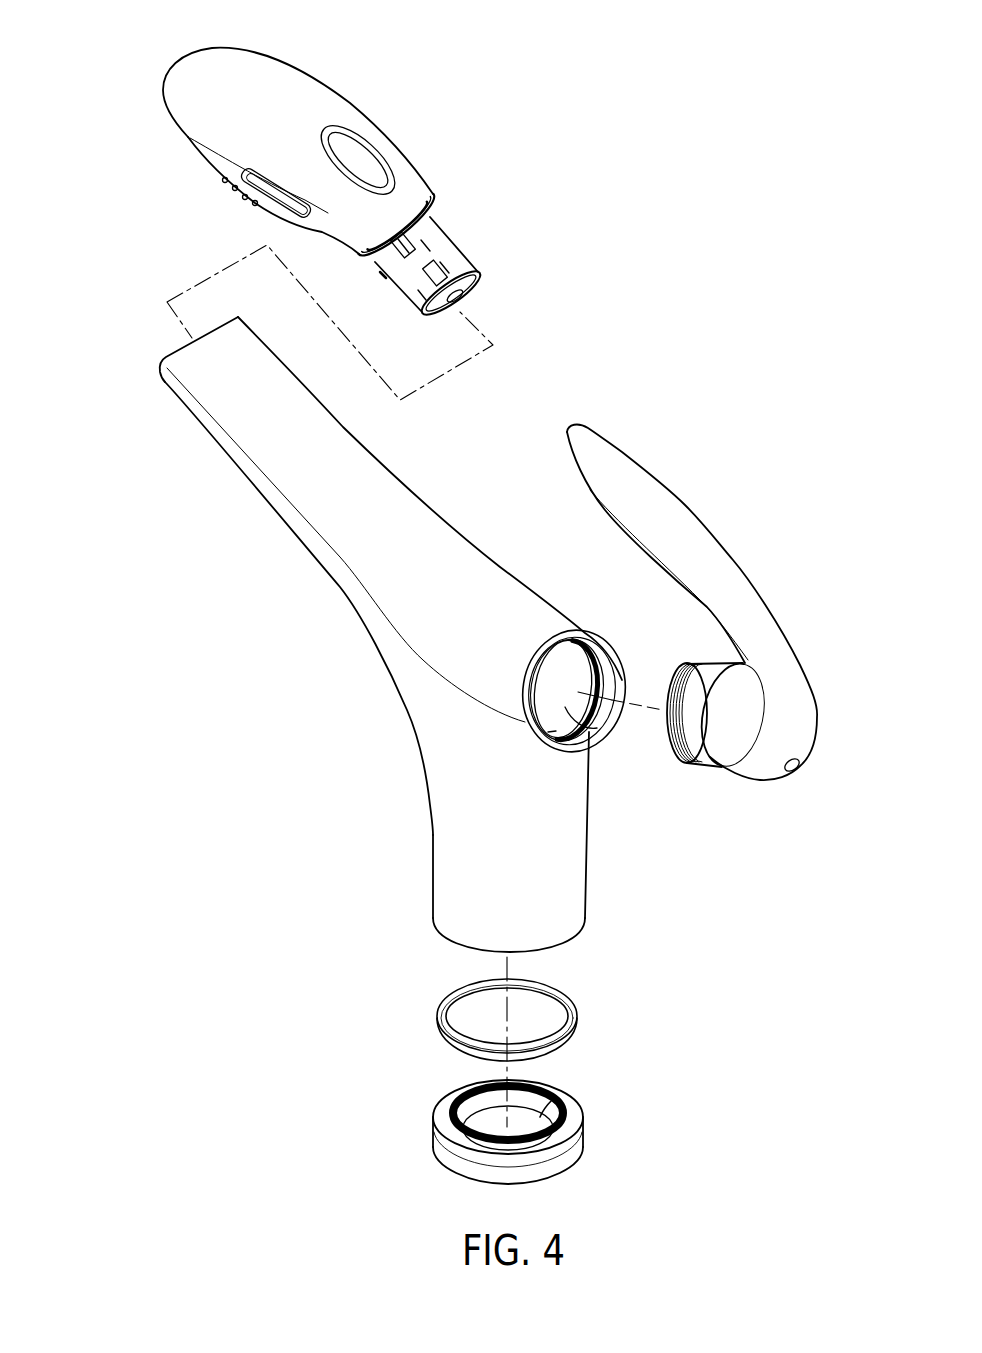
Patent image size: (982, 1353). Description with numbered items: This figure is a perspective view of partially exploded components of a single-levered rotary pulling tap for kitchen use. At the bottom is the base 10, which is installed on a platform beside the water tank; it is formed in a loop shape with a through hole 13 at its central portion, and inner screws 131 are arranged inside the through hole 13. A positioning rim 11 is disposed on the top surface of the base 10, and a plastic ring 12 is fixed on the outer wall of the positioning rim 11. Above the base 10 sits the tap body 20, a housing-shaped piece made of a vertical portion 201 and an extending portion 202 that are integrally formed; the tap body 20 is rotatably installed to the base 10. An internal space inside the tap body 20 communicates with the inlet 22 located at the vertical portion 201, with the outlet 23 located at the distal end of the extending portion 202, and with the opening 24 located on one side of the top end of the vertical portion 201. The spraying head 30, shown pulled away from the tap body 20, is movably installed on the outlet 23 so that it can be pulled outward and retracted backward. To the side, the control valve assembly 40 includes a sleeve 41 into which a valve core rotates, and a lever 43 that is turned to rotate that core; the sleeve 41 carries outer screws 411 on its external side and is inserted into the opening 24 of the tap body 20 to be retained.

The base 10 is at (495, 1104).
The positioning rim 11 is at (458, 1102).
The plastic ring 12 is at (443, 1010).
The through hole 13 is at (533, 1126).
The inner screws 131 is at (552, 1100).
The tap body 20 is at (398, 612).
The vertical portion 201 is at (432, 833).
The extending portion 202 is at (268, 505).
The inlet 22 is at (562, 940).
The outlet 23 is at (170, 345).
The opening 24 is at (588, 735).
The spraying head 30 is at (413, 148).
The control valve assembly 40 is at (692, 610).
The sleeve 41 is at (696, 716).
The outer screws 411 is at (683, 762).
The lever 43 is at (622, 460).